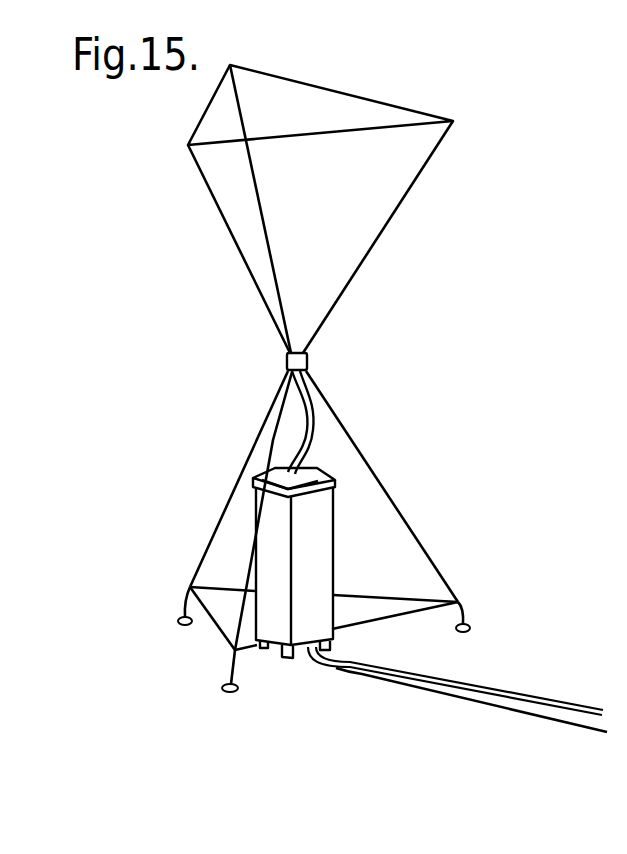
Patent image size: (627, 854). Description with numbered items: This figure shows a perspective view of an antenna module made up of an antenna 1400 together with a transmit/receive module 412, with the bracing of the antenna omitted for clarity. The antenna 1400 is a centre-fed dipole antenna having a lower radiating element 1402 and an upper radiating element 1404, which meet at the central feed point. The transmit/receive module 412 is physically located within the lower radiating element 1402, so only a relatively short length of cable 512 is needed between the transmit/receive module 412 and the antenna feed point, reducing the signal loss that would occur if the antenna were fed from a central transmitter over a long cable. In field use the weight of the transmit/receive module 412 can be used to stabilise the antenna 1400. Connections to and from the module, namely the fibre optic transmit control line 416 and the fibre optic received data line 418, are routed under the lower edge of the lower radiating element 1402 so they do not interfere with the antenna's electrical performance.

The antenna 1400 is at (216, 336).
The upper radiating element 1404 is at (214, 199).
The lower radiating element 1402 is at (226, 505).
The cable 512 is at (313, 430).
The transmit/receive module 412 is at (334, 533).
The transmit control line 416 is at (496, 688).
The fibre optic received data line 418 is at (500, 704).